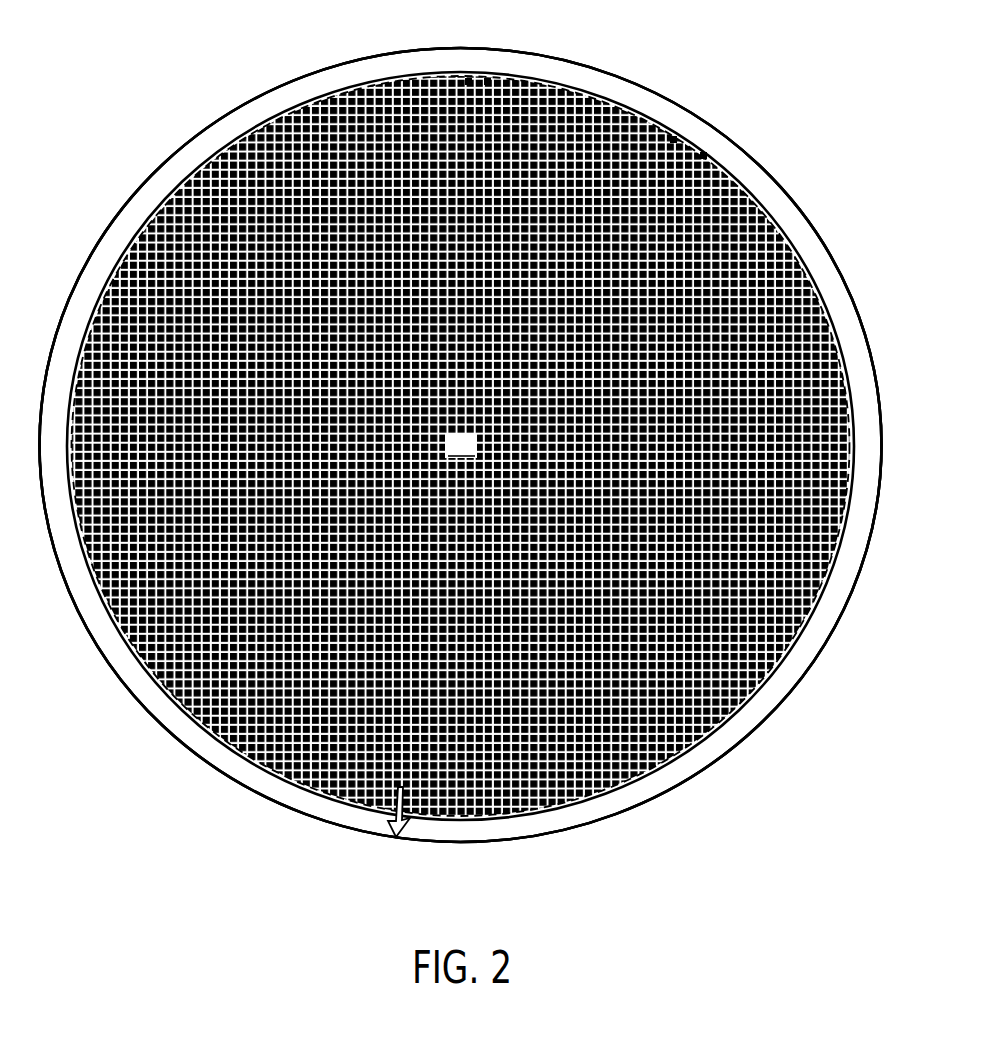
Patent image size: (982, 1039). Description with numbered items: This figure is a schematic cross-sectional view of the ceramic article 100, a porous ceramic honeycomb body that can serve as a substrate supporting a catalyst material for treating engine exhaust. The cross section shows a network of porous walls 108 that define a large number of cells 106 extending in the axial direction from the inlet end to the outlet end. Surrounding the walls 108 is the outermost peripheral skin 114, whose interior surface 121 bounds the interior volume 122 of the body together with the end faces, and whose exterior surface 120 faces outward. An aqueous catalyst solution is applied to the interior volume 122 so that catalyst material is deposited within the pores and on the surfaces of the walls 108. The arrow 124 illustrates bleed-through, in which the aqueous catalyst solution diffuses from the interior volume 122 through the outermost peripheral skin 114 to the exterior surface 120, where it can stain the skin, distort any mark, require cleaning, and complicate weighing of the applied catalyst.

The ceramic article 100 is at (727, 80).
The cells 106 is at (468, 88).
The walls 108 is at (672, 140).
The outermost peripheral skin 114 is at (618, 802).
The exterior surface 120 is at (347, 832).
The interior surface 121 is at (757, 692).
The interior volume 122 is at (232, 760).
The arrow 124 is at (417, 822).